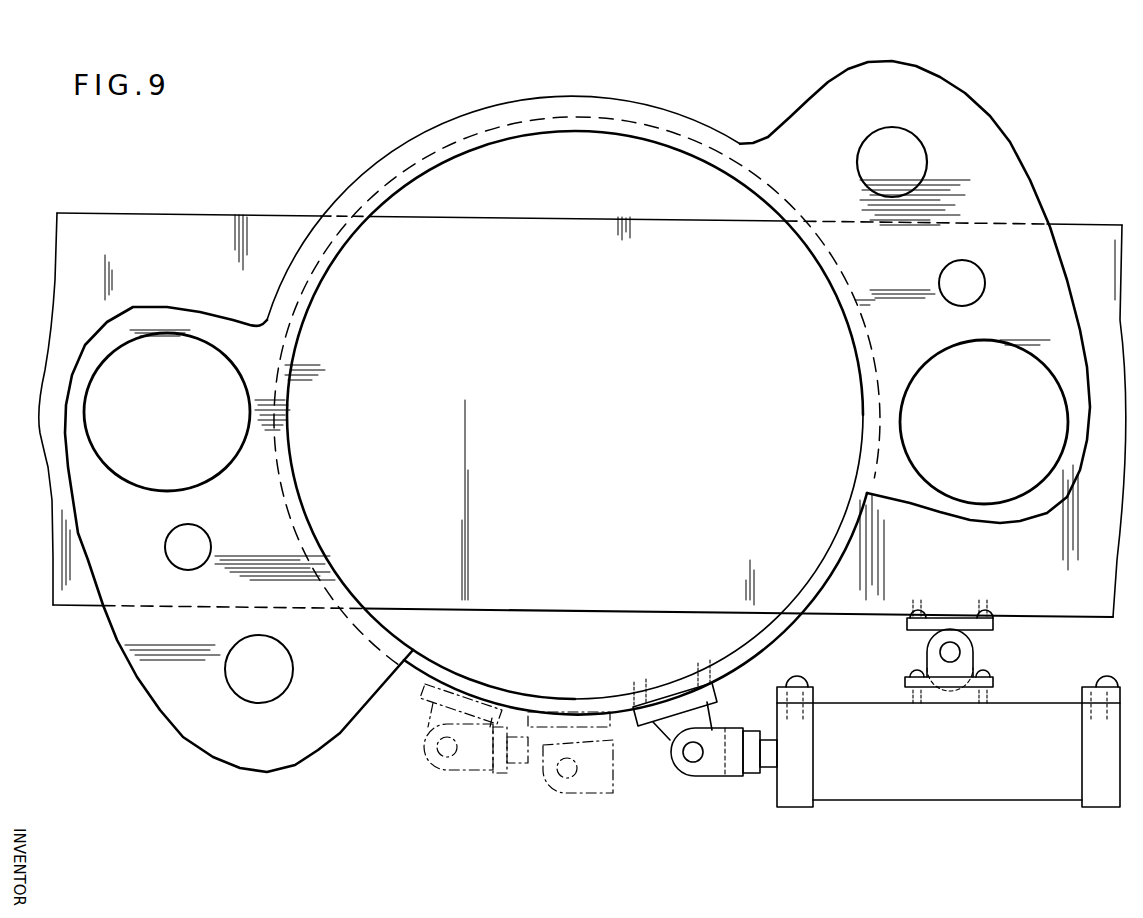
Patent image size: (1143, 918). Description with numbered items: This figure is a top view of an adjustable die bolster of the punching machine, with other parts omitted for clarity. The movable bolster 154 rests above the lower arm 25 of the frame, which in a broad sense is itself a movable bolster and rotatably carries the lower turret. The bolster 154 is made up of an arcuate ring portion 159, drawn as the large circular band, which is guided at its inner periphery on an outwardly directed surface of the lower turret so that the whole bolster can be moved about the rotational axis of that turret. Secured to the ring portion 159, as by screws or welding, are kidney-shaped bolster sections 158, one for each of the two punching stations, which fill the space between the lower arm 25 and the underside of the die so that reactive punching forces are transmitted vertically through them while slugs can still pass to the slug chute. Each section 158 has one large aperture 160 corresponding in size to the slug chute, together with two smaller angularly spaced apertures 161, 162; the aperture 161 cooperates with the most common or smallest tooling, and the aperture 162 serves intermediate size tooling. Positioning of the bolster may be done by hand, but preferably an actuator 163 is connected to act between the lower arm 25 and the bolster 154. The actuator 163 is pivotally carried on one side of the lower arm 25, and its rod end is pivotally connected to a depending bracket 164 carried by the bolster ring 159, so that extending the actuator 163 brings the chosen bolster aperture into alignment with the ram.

The lower arm 25 is at (190, 228).
The movable bolster 154 is at (1051, 203).
The kidney-shaped section 158 is at (1007, 170).
The ring portion 159 is at (290, 337).
The aperture 160 is at (178, 332).
The aperture 161 is at (193, 530).
The aperture 162 is at (270, 642).
The actuator 163 is at (1018, 720).
The depending bracket 164 is at (663, 737).